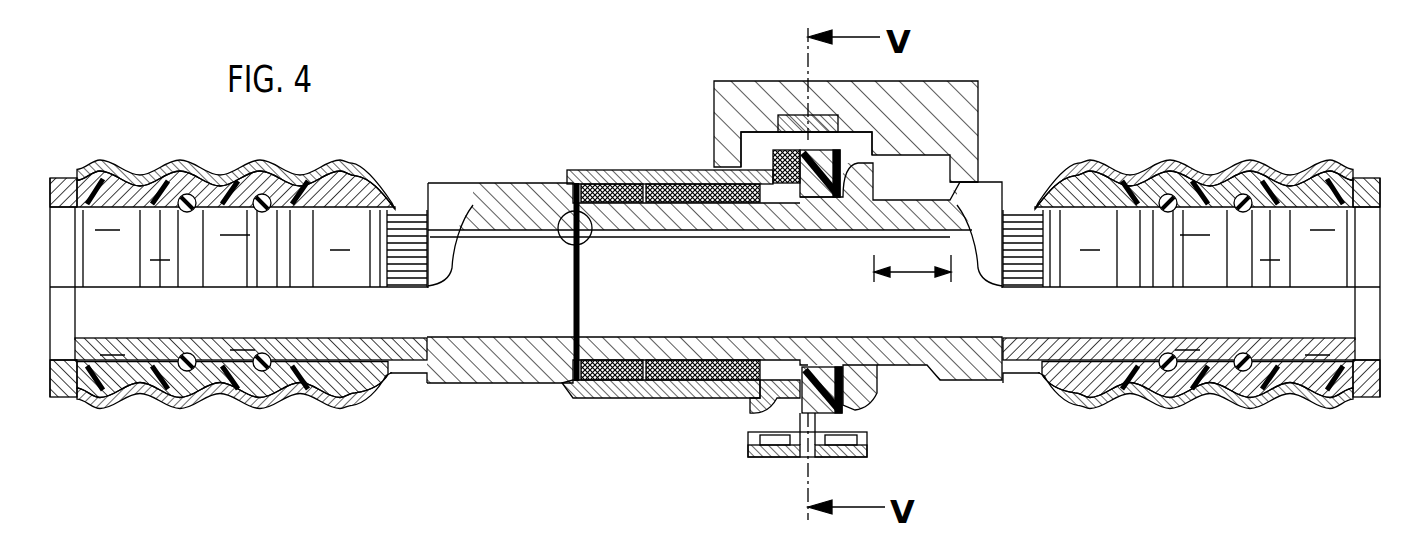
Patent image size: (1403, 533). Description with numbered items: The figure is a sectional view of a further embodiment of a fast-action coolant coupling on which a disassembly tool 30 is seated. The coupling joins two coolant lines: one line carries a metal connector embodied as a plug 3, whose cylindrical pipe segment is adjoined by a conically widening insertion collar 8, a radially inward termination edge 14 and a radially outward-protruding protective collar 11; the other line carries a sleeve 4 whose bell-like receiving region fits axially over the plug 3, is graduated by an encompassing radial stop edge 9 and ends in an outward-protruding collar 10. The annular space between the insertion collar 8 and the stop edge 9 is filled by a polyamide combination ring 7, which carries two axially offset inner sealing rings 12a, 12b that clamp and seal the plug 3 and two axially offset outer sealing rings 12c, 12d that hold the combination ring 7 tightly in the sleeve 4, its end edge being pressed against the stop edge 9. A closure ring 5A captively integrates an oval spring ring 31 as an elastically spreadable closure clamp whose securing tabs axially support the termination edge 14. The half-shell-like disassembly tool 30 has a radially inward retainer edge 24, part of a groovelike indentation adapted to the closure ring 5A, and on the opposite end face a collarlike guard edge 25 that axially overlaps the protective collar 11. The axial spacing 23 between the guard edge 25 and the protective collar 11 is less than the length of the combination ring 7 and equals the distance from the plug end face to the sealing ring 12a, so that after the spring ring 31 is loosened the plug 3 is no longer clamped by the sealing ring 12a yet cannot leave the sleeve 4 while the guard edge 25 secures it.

The plug 3 is at (973, 370).
The sleeve 4 is at (505, 185).
The closure ring 5A is at (741, 155).
The combination ring 7 is at (623, 382).
The insertion collar 8 is at (790, 183).
The stop edge 9 is at (556, 183).
The collar 10 is at (752, 413).
The protective collar 11 is at (868, 383).
The sealing ring 12a is at (677, 203).
The sealing ring 12b is at (627, 203).
The sealing ring 12c is at (692, 360).
The sealing ring 12d is at (598, 360).
The termination edge 14 is at (820, 200).
The axial spacing 23 is at (912, 275).
The retainer edge 24 is at (717, 173).
The guard edge 25 is at (970, 173).
The disassembly tool 30 is at (978, 100).
The spring ring 31 is at (845, 410).